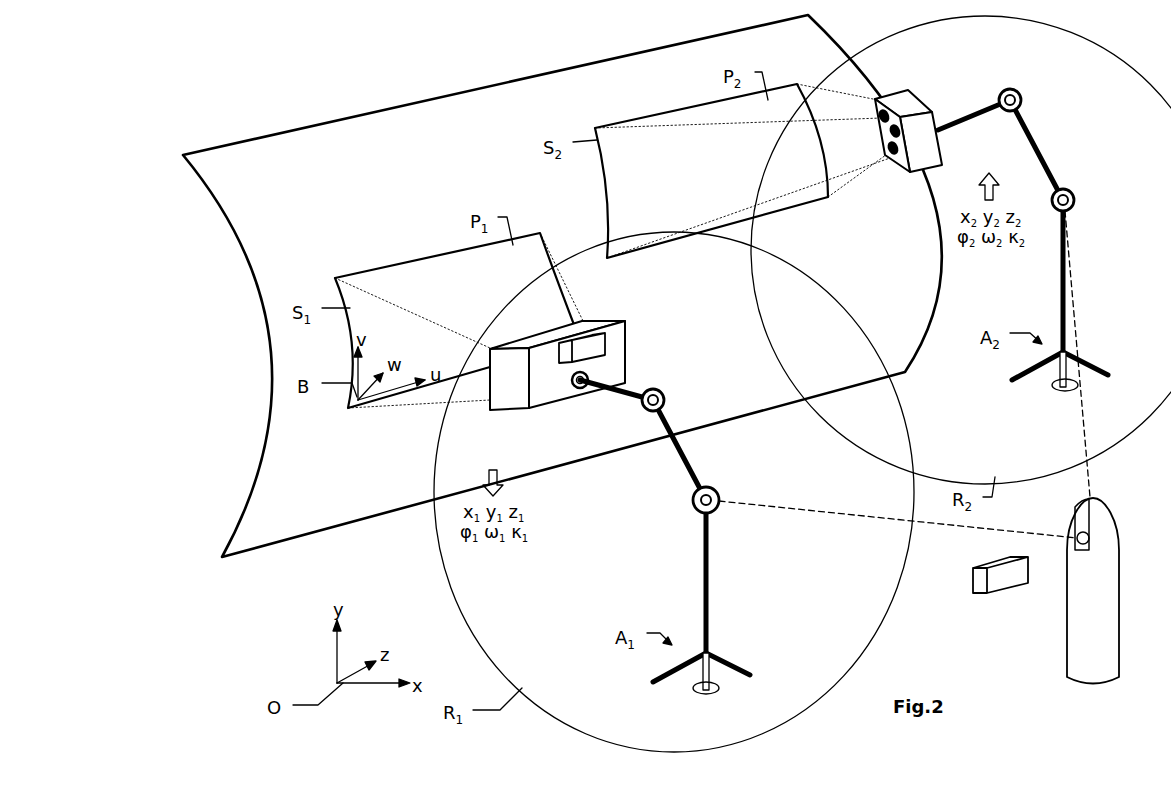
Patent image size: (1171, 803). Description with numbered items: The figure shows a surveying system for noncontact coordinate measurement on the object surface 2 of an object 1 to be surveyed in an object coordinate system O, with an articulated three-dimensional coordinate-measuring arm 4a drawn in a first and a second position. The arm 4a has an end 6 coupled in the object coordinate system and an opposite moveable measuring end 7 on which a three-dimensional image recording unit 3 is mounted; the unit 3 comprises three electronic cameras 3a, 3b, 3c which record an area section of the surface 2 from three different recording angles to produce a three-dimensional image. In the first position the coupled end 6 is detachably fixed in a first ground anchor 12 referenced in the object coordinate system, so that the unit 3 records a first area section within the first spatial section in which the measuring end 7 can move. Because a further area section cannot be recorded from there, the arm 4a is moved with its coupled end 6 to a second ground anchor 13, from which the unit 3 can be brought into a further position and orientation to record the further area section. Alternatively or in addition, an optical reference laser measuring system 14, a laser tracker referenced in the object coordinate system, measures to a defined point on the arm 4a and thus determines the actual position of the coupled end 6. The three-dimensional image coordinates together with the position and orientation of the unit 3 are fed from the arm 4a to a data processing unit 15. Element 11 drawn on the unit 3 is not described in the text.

The object 1 is at (302, 100).
The object surface 2 is at (475, 105).
The 3D image recording unit 3 is at (739, 277).
The electronic camera 3a is at (879, 116).
The electronic camera 3b is at (893, 160).
The electronic camera 3c is at (889, 133).
The articulated 3D coordinate-measuring arm 4a is at (673, 542).
The coupled end 6 is at (872, 540).
The moveable measuring end 7 is at (578, 391).
The projector 11 is at (595, 345).
The first ground anchor 12 is at (705, 697).
The second ground anchor 13 is at (1062, 400).
The optical reference laser measuring system 14 is at (1075, 652).
The data processing unit 15 is at (1013, 580).